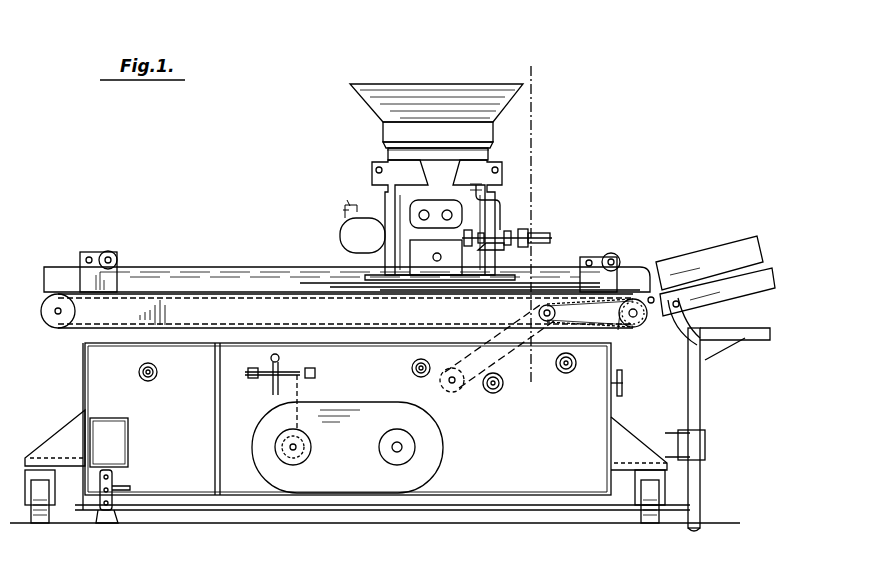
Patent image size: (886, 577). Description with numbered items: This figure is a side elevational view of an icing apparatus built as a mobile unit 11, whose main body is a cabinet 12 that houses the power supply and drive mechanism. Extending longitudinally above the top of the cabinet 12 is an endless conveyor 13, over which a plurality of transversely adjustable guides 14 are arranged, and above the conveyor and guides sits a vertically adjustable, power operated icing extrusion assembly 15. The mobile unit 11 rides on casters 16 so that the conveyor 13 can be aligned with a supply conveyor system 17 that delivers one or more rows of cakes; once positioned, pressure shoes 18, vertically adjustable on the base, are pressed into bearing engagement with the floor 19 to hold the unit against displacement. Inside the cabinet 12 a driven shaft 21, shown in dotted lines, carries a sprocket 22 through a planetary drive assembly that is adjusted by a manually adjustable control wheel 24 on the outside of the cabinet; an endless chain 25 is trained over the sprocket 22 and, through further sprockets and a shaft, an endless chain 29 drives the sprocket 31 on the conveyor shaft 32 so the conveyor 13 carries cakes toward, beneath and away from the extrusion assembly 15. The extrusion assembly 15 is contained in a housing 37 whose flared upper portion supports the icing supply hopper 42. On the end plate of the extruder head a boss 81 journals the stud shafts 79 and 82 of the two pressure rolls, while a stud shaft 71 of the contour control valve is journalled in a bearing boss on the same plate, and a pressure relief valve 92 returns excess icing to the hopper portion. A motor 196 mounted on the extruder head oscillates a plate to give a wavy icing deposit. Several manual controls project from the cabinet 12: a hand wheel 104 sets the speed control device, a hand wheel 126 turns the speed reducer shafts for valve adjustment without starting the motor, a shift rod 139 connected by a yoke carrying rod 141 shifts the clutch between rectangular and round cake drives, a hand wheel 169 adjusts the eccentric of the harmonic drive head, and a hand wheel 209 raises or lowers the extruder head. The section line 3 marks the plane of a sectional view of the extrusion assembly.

The section line 3- 3 is at (548, 61).
The mobile unit 11 is at (85, 243).
The cabinet 12 is at (190, 444).
The endless conveyor 13 is at (65, 330).
The transversely adjustable guides 14 is at (205, 276).
The icing extrusion assembly 15 is at (369, 157).
The casters 16 is at (40, 528).
The supply conveyor system 17 is at (733, 240).
The pressure shoes 18 is at (108, 524).
The floor 19 is at (205, 524).
The driven shaft 21 is at (452, 392).
The sprocket 22 is at (440, 380).
The manually adjustable control wheel 24 is at (494, 394).
The endless chain 25 is at (512, 318).
The endless chain 29 is at (556, 300).
The sprocket 31 is at (642, 330).
The conveyor shaft 32 is at (634, 310).
The housing 37 is at (497, 156).
The icing supply hopper 42 is at (400, 98).
The stud shaft 71 is at (437, 262).
The stud shaft 79 is at (422, 208).
The boss 81 is at (420, 212).
The stud shaft 82 is at (452, 212).
The pressure relief valve 92 is at (536, 235).
The hand wheel 104 is at (623, 385).
The hand wheel 126 is at (566, 374).
The shift rod 139 is at (277, 392).
The yoke carrying rod 141 is at (318, 447).
The hand wheel 169 is at (157, 373).
The motor 196 is at (362, 234).
The hand wheel 209 is at (412, 366).